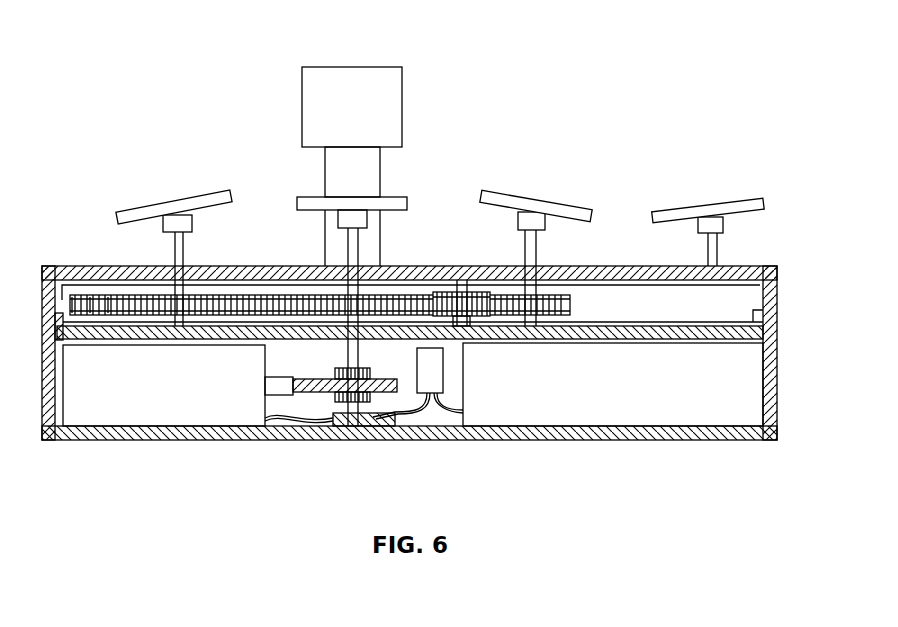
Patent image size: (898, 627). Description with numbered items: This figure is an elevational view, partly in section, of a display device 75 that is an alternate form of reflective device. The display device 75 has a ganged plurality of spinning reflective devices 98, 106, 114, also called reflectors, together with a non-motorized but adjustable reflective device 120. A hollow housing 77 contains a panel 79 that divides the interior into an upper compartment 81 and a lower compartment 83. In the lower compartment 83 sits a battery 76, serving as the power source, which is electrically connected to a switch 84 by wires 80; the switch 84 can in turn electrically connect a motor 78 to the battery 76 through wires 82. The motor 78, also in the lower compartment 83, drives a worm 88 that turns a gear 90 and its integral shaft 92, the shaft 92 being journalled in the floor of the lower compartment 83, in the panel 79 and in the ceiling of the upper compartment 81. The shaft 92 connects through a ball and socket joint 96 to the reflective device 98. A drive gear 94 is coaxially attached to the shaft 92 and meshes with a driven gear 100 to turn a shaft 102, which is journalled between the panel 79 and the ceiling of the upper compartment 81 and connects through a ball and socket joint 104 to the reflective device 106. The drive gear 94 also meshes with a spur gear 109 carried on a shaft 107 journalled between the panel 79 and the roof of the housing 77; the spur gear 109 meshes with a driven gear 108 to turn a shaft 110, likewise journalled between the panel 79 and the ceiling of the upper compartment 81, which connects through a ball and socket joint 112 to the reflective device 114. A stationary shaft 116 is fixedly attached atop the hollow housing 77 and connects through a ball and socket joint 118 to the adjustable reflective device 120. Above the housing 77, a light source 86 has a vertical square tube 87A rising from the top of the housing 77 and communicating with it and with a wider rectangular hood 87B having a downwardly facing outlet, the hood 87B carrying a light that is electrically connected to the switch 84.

The display device 75 is at (118, 28).
The battery 76 is at (750, 412).
The hollow housing 77 is at (770, 292).
The motor 78 is at (168, 410).
The panel 79 is at (758, 330).
The wires 80 is at (435, 380).
The upper compartment 81 is at (657, 312).
The wires 82 is at (278, 418).
The lower compartment 83 is at (294, 369).
The switch 84 is at (462, 424).
The light source 86 is at (418, 78).
The vertical square tube 87A is at (325, 172).
The rectangular hood 87B is at (302, 105).
The worm 88 is at (375, 394).
The gear 90 is at (333, 406).
The shaft 92 is at (358, 262).
The drive gear 94 is at (313, 294).
The ball and socket joint 96 is at (367, 216).
The reflective device 98 is at (398, 197).
The driven gear 100 is at (97, 300).
The shaft 102 is at (183, 255).
The ball and socket joint 104 is at (178, 222).
The reflective device 106 is at (215, 203).
The shaft 107 is at (470, 340).
The driven gear 108 is at (572, 305).
The spur gear 109 is at (466, 290).
The shaft 110 is at (532, 250).
The ball and socket joint 112 is at (530, 222).
The reflective device 114 is at (582, 213).
The stationary shaft 116 is at (718, 250).
The ball and socket joint 118 is at (710, 222).
The reflective device 120 is at (755, 204).